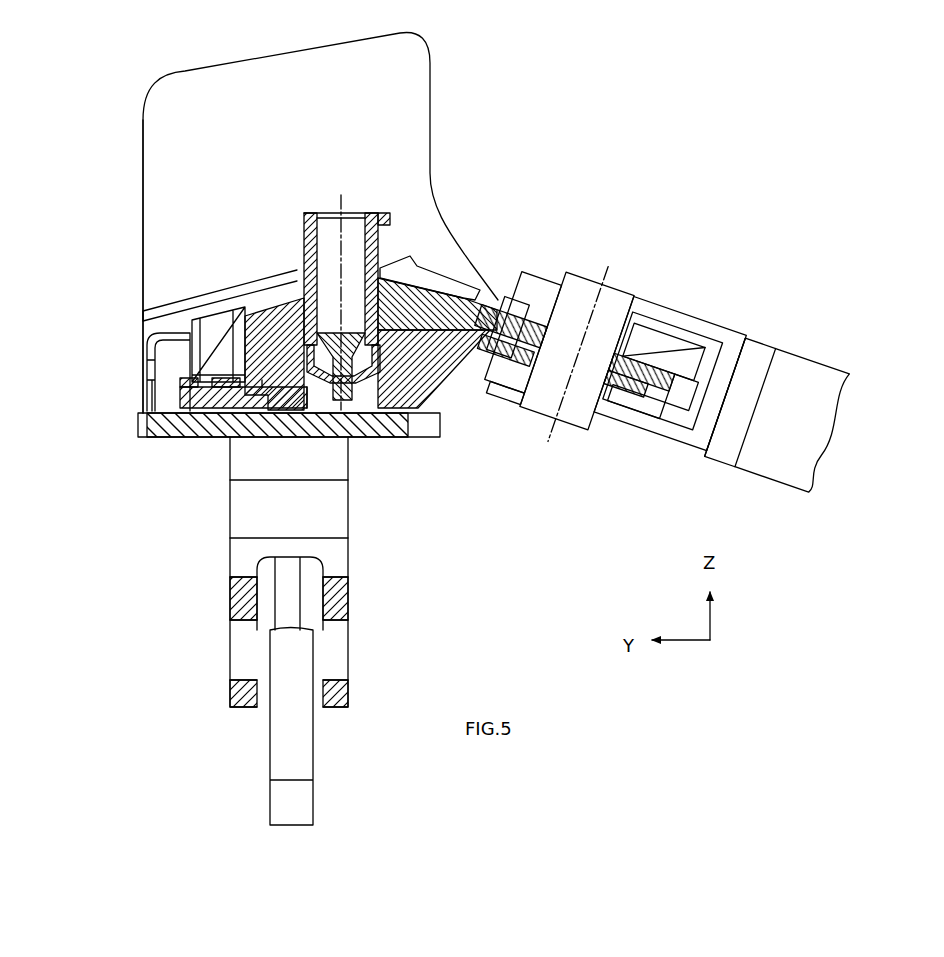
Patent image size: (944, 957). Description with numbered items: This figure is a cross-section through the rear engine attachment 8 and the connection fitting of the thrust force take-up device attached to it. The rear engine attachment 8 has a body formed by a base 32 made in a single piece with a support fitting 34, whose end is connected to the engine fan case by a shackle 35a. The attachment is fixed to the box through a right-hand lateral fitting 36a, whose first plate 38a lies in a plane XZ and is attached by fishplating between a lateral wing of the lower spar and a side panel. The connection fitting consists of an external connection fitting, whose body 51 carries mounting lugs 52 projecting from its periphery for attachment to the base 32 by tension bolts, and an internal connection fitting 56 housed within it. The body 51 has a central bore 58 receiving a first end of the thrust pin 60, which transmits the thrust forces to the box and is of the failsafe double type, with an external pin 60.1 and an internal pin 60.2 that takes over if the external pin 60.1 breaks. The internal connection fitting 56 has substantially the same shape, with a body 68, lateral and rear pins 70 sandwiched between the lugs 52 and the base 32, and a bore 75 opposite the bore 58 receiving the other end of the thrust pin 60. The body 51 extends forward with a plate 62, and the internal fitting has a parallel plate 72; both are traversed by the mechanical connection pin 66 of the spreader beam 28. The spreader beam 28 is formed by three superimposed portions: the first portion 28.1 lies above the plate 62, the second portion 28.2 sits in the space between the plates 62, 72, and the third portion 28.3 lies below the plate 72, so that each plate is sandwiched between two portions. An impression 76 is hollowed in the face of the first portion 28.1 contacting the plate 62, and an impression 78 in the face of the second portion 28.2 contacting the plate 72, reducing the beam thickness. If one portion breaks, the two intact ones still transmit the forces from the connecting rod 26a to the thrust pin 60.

The rear engine attachment 8 is at (148, 560).
The connecting rod 26a is at (800, 367).
The spreader beam 28 is at (700, 399).
The first portion 28.1 is at (664, 352).
The second portion 28.2 is at (681, 392).
The third portion 28.3 is at (637, 402).
The base 32 is at (162, 427).
The support fitting 34 is at (338, 557).
The shackle 35a is at (303, 752).
The right-hand lateral fitting 36a is at (442, 83).
The first plate 38a is at (165, 127).
The body 51 is at (265, 300).
The mounting lug 52 is at (187, 385).
The internal connection fitting 56 is at (464, 287).
The central bore 58 is at (303, 280).
The thrust pin 60 is at (406, 279).
The external pin 60.1 is at (380, 240).
The internal pin 60.2 is at (310, 213).
The plate 62 is at (640, 337).
The mechanical connection pin 66 is at (612, 292).
The body 68 is at (292, 470).
The lateral and rear pins 70 is at (200, 427).
The plate 72 is at (613, 392).
The bore 75 is at (345, 405).
The impression 76 is at (553, 315).
The impression 78 is at (505, 375).